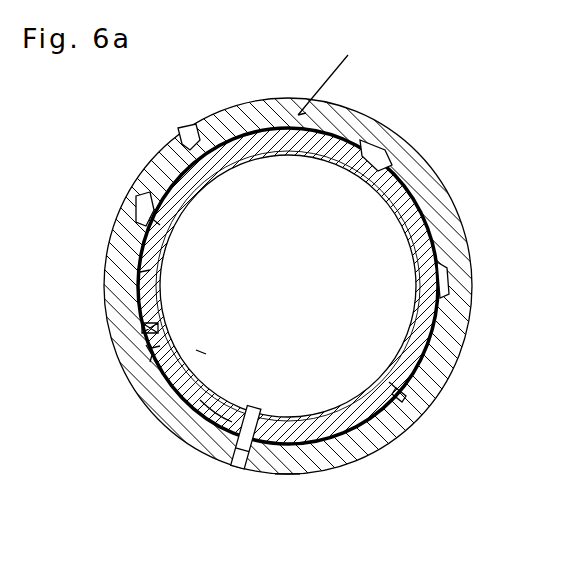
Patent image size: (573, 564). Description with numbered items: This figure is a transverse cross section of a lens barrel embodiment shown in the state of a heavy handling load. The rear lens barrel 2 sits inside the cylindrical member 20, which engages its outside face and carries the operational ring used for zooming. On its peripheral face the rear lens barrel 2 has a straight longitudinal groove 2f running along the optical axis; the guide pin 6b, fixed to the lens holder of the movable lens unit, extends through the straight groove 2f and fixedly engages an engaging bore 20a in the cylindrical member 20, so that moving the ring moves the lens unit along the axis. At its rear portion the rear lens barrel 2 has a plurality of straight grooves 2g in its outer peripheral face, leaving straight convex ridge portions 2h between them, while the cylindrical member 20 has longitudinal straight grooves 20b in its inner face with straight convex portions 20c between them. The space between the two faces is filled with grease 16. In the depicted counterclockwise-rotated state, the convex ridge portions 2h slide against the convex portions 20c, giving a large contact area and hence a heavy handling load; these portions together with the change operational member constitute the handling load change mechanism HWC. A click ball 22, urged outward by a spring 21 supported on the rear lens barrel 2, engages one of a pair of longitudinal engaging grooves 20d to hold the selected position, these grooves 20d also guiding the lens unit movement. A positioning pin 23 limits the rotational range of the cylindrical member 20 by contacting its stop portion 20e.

The cylindrical member 20 is at (245, 115).
The rear lens barrel 2 is at (313, 152).
The straight convex portions 20c is at (385, 190).
The straight convex ridge portions 2h is at (400, 176).
The handling load change mechanism HWC is at (337, 73).
The grease 16 is at (370, 150).
The straight grooves 2g is at (147, 170).
The longitudinal straight grooves 20b is at (140, 272).
The longitudinal engaging grooves 20d is at (148, 329).
The spring 21 is at (150, 338).
The click ball 22 is at (143, 345).
The stop portion 20e is at (425, 378).
The positioning pin 23 is at (395, 393).
The straight longitudinal groove 2f is at (222, 412).
The engaging bore 20a is at (244, 462).
The guide pin 6b is at (285, 470).